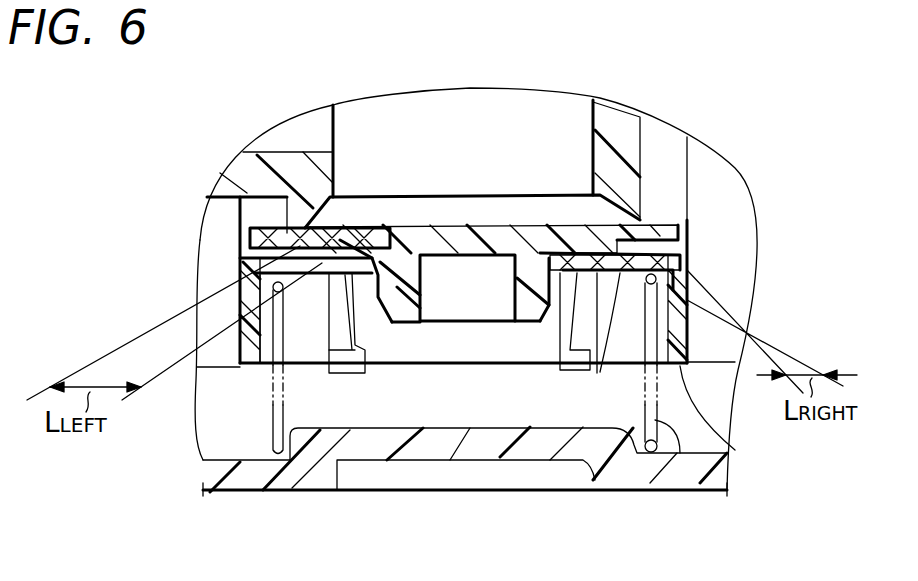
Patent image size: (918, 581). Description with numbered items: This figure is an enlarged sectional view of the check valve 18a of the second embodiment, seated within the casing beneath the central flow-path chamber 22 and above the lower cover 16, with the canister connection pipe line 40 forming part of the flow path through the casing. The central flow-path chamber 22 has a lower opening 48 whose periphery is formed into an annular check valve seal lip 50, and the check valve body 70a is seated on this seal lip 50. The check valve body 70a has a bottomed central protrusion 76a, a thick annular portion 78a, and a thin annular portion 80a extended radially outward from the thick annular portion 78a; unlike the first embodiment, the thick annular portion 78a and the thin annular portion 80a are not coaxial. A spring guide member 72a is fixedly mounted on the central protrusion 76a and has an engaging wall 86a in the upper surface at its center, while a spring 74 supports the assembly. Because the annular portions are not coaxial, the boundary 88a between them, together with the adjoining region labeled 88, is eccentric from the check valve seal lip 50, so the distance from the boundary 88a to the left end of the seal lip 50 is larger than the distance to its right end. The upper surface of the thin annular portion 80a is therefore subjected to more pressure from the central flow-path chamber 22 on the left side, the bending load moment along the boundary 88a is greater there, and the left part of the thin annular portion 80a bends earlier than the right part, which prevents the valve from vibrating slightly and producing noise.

The lower cover 16 is at (613, 470).
The check valve 18a is at (500, 223).
The central flow-path chamber 22 is at (365, 117).
The canister connection pipe line 40 is at (272, 152).
The lower opening 48 is at (420, 207).
The check valve seal lip 50 is at (300, 222).
The check valve body 70a is at (487, 323).
The spring guide member 72a is at (735, 470).
The spring 74 is at (662, 468).
The central protrusion 76a is at (530, 270).
The thick annular portion 78a is at (370, 240).
The thin annular portion 80a is at (297, 258).
The engaging wall 86a is at (383, 280).
The right leg 88 is at (598, 372).
The boundary 88a is at (338, 268).